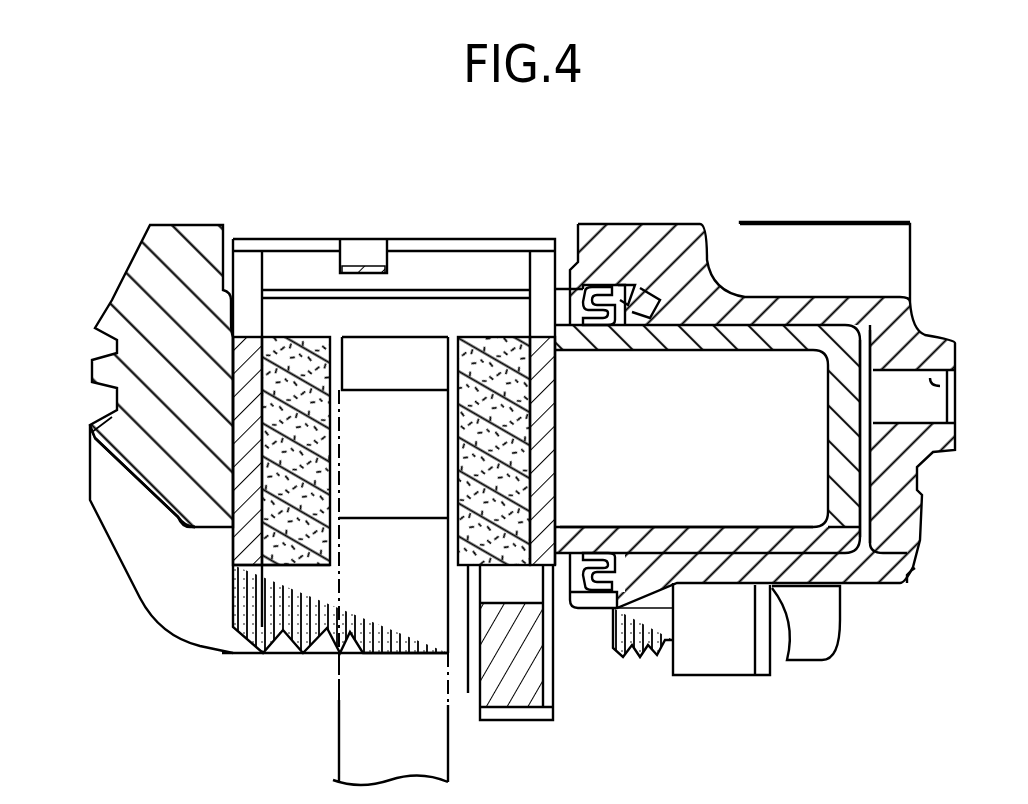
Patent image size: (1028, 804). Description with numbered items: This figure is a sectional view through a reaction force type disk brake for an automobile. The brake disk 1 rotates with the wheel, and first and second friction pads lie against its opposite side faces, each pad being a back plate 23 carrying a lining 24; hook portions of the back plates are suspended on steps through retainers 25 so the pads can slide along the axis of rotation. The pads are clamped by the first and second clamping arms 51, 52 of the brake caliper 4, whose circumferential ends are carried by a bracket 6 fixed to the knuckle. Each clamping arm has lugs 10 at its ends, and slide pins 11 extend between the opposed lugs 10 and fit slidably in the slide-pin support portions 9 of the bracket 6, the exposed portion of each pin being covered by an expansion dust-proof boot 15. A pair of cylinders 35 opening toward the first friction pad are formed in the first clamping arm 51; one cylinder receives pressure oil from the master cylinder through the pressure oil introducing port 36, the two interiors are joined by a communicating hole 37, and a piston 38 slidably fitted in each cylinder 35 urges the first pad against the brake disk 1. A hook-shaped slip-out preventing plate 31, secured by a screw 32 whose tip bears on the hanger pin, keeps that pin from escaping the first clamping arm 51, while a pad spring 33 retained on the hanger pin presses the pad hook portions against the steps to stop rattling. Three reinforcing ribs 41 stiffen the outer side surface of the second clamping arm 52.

The brake disk 1 is at (339, 742).
The brake caliper 4 is at (636, 224).
The bracket 6 is at (518, 726).
The slide-pin support portion 9 is at (402, 642).
The lug 10 is at (718, 655).
The slide pin 11 is at (808, 645).
The expansion dust-proof boot 15 is at (292, 650).
The back plate 23 is at (247, 544).
The lining 24 is at (473, 357).
The retainer 25 is at (447, 310).
The slip-out preventing plate 31 is at (556, 483).
The screw 32 is at (254, 580).
The pad spring 33 is at (364, 250).
The cylinder 35 is at (884, 573).
The pressure oil introducing port 36 is at (957, 380).
The communicating hole 37 is at (868, 455).
The piston 38 is at (742, 540).
The reinforcing rib 41 is at (116, 320).
The first clamping arm 51 is at (897, 262).
The second clamping arm 52 is at (147, 453).